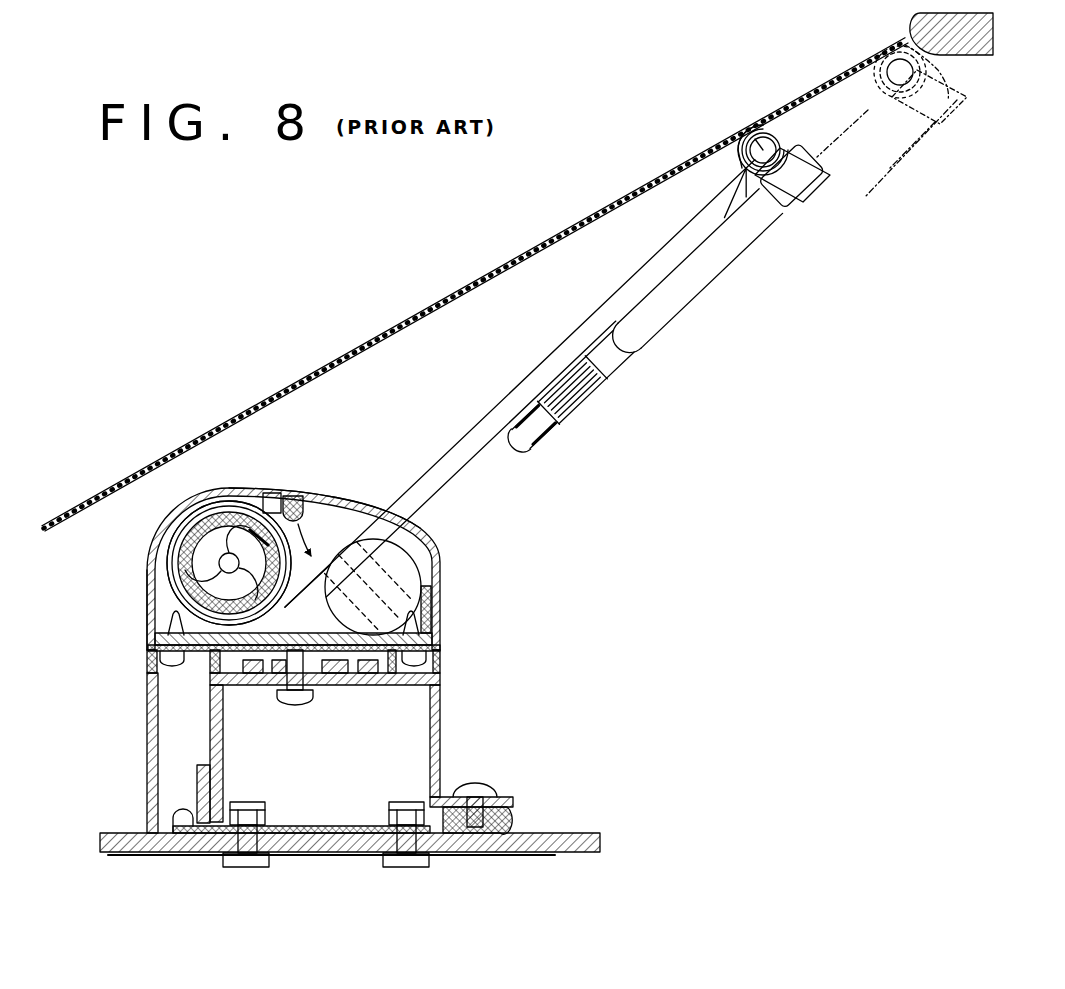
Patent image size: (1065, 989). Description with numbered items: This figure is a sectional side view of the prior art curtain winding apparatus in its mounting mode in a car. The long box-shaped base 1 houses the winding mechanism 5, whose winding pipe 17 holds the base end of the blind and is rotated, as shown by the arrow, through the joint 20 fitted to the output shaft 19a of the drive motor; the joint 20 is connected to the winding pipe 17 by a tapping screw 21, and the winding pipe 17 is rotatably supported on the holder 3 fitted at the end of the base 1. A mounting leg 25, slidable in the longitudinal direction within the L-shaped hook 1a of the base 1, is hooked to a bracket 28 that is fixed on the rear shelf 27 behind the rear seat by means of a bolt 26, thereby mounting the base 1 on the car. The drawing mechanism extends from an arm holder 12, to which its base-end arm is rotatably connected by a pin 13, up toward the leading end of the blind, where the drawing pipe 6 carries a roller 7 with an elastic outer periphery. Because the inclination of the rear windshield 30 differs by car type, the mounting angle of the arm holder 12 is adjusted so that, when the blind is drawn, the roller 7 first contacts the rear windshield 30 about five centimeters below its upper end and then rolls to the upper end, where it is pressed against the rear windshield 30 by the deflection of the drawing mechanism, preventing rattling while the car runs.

The base 1 is at (250, 488).
The L-shaped hook 1a is at (441, 667).
The holder 3 is at (368, 490).
The winding mechanism 5 is at (168, 604).
The drawing pipe 6 is at (748, 133).
The roller 7 is at (768, 110).
The arm holder 12 is at (441, 572).
The pin 13 is at (431, 602).
The winding pipe 17 is at (321, 494).
The output shaft 19a is at (307, 601).
The joint 20 is at (147, 562).
The tapping screw 21 is at (219, 558).
The mounting leg 25 is at (443, 750).
The bolt 26 is at (357, 827).
The rear shelf 27 is at (563, 830).
The bracket 28 is at (287, 823).
The rear windshield 30 is at (393, 331).